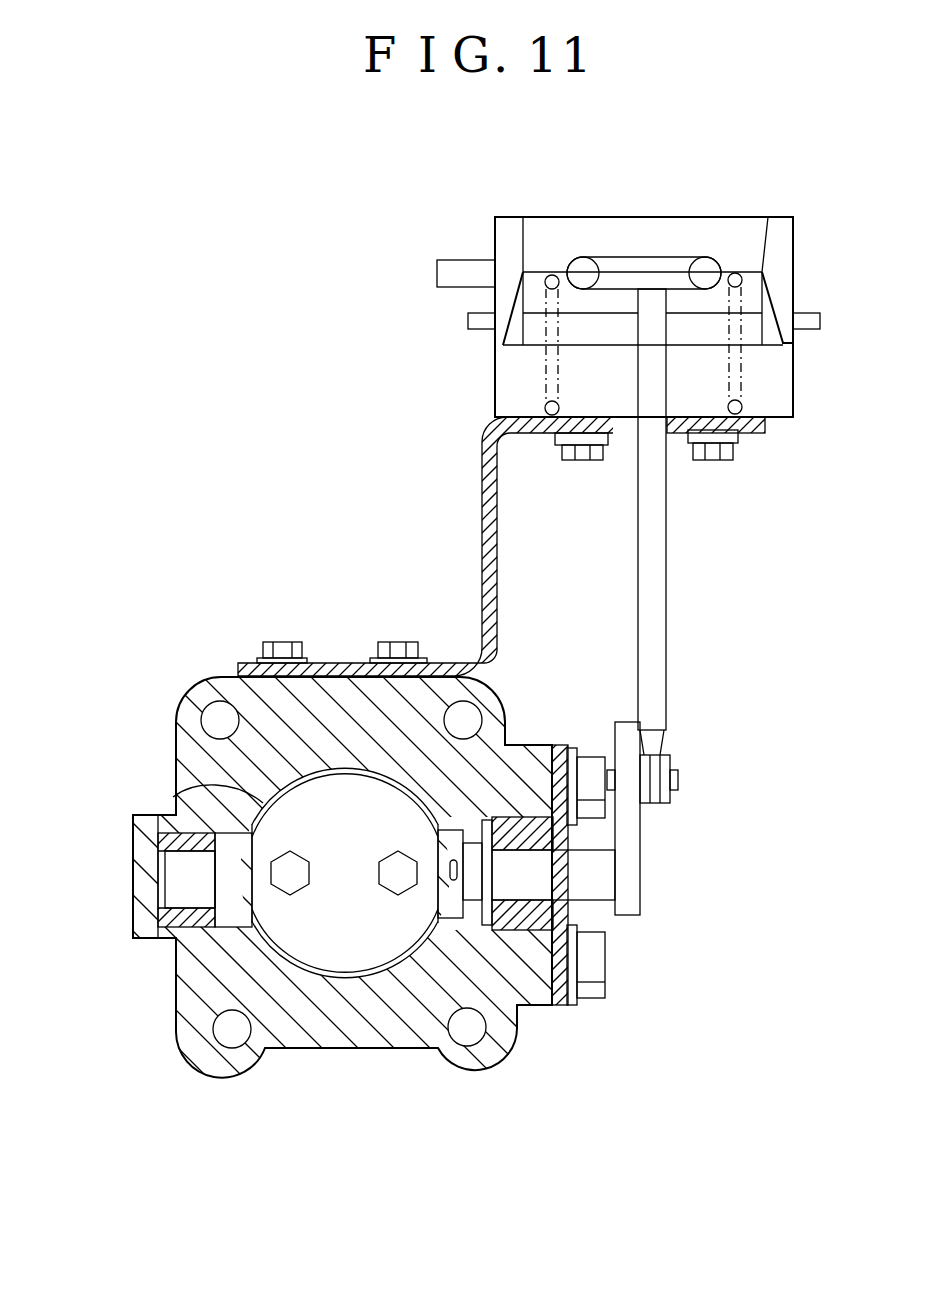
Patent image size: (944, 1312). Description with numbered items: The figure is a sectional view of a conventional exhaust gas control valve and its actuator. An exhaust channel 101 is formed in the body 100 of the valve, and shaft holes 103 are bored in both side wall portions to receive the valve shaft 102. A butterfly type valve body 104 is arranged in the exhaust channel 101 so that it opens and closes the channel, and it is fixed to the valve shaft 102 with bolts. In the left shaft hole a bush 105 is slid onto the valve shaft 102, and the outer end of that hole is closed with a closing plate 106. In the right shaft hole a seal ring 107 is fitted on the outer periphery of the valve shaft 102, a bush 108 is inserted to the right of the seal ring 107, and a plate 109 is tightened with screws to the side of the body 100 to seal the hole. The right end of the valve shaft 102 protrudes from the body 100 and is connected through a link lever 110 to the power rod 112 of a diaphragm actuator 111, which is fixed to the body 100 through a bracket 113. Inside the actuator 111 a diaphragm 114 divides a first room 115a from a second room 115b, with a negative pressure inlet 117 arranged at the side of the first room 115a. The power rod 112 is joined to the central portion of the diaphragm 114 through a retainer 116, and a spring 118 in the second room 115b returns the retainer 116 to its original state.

The body 100 is at (173, 728).
The exhaust channel 101 is at (173, 797).
The valve shaft 102 is at (175, 887).
The shaft hole 103 is at (205, 928).
The butterfly type valve body 104 is at (342, 953).
The bush 105 is at (158, 843).
The closing plate 106 is at (148, 870).
The seal ring 107 is at (497, 830).
The bush 108 is at (578, 913).
The plate 109 is at (560, 995).
The link lever 110 is at (632, 852).
The diaphragm actuator 111 is at (727, 212).
The power rod 112 is at (650, 580).
The bracket 113 is at (480, 508).
The diaphragm 114 is at (521, 270).
The first room 115a is at (590, 232).
The second room 115b is at (503, 372).
The retainer 116 is at (646, 262).
The negative pressure inlet 117 is at (445, 275).
The spring 118 is at (745, 388).